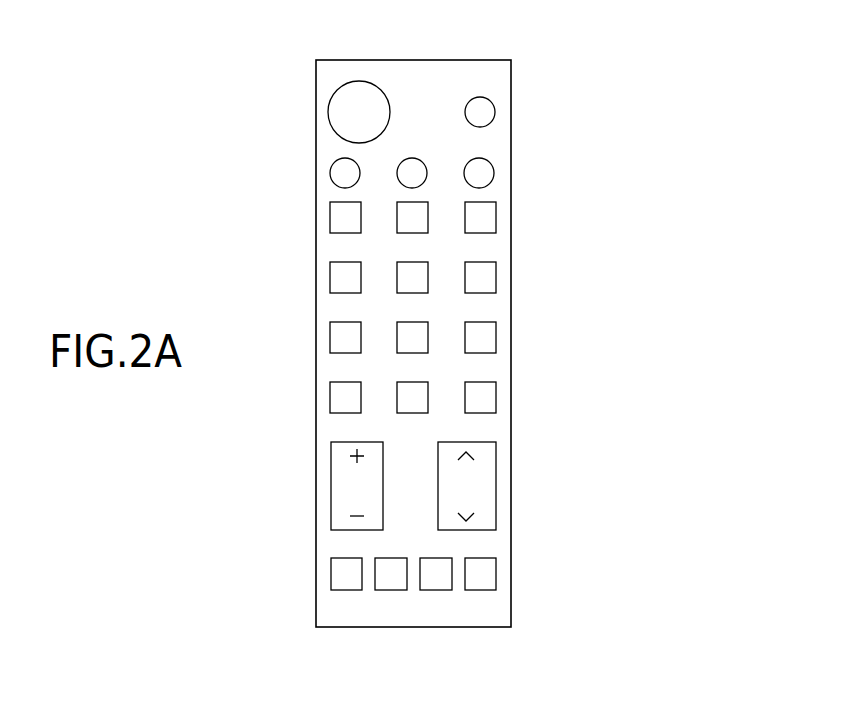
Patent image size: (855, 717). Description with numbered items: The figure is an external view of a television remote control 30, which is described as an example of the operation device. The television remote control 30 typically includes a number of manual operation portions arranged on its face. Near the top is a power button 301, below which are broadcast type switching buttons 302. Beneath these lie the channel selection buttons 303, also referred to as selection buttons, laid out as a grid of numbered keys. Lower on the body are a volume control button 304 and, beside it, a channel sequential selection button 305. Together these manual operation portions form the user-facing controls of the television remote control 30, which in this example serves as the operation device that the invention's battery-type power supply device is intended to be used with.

The television remote control 30 is at (459, 46).
The power button 301 is at (330, 119).
The broadcast type switching buttons 302 is at (330, 174).
The channel selection buttons 303 is at (331, 216).
The volume control button 304 is at (332, 508).
The channel sequential selection button 305 is at (496, 497).